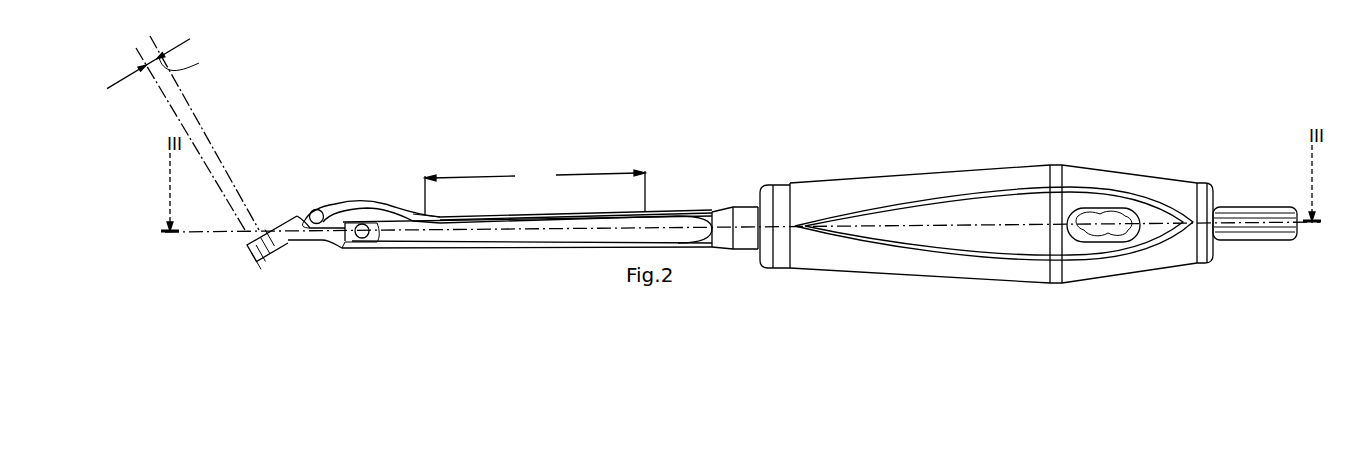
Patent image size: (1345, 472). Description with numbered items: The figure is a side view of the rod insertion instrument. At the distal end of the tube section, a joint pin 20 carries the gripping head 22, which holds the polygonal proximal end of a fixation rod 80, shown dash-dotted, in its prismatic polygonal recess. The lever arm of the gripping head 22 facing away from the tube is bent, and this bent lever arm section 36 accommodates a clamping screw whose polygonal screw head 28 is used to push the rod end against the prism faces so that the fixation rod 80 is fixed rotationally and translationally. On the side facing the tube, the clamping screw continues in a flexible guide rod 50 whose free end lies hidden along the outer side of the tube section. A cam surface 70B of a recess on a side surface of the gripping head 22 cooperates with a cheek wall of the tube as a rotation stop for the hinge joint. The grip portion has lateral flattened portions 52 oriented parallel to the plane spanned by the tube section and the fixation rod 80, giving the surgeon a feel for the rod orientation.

The fixation rod 80 is at (223, 166).
The gripping head 22 is at (298, 238).
The joint pin 20 is at (364, 239).
The polygonal screw head 28 is at (318, 210).
The bent lever arm section 36 is at (285, 212).
The flexible guide rod 50 is at (385, 207).
The cam surface 70B is at (349, 242).
The lateral flattened portions 52 is at (973, 233).